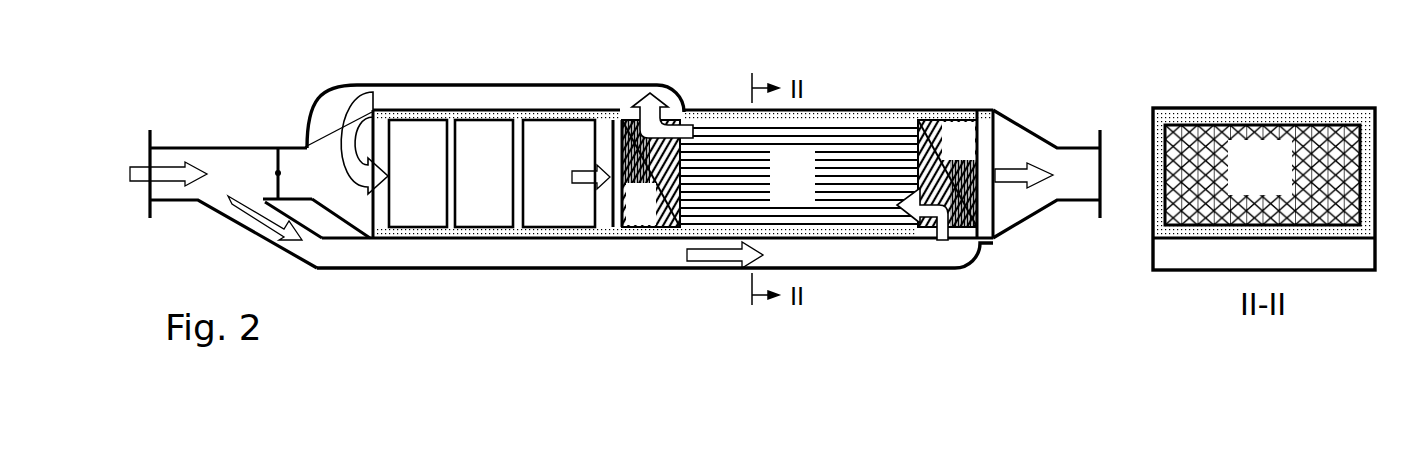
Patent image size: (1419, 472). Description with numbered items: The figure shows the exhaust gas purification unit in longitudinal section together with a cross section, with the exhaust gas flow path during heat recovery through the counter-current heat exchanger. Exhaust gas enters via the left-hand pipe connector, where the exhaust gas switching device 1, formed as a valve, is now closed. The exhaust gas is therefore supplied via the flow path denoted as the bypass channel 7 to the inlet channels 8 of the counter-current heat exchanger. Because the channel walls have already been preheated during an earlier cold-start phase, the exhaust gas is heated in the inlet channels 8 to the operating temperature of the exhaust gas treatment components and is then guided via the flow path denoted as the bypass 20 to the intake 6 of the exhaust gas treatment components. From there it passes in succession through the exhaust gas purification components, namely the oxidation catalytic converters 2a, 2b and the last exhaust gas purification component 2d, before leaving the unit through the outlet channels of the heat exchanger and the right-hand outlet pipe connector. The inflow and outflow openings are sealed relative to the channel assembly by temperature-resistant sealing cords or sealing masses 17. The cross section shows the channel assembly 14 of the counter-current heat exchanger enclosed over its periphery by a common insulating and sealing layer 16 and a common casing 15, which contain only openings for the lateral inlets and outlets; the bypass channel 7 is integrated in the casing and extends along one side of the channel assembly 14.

The exhaust gas switching device 1 is at (287, 155).
The oxidation catalytic converter 2a is at (418, 173).
The oxidation catalytic converter 2b is at (484, 173).
The exhaust gas purification component 2d is at (566, 173).
The direct flow path 6 is at (353, 143).
The bypass channel 7 is at (820, 234).
The inlet channels 8 is at (799, 176).
The channel assembly 14 is at (1262, 175).
The common casing 15 is at (1208, 107).
The insulating and sealing layer 16 is at (837, 118).
The sealing cords or sealing masses 17 is at (799, 173).
The bypass 20 is at (494, 116).